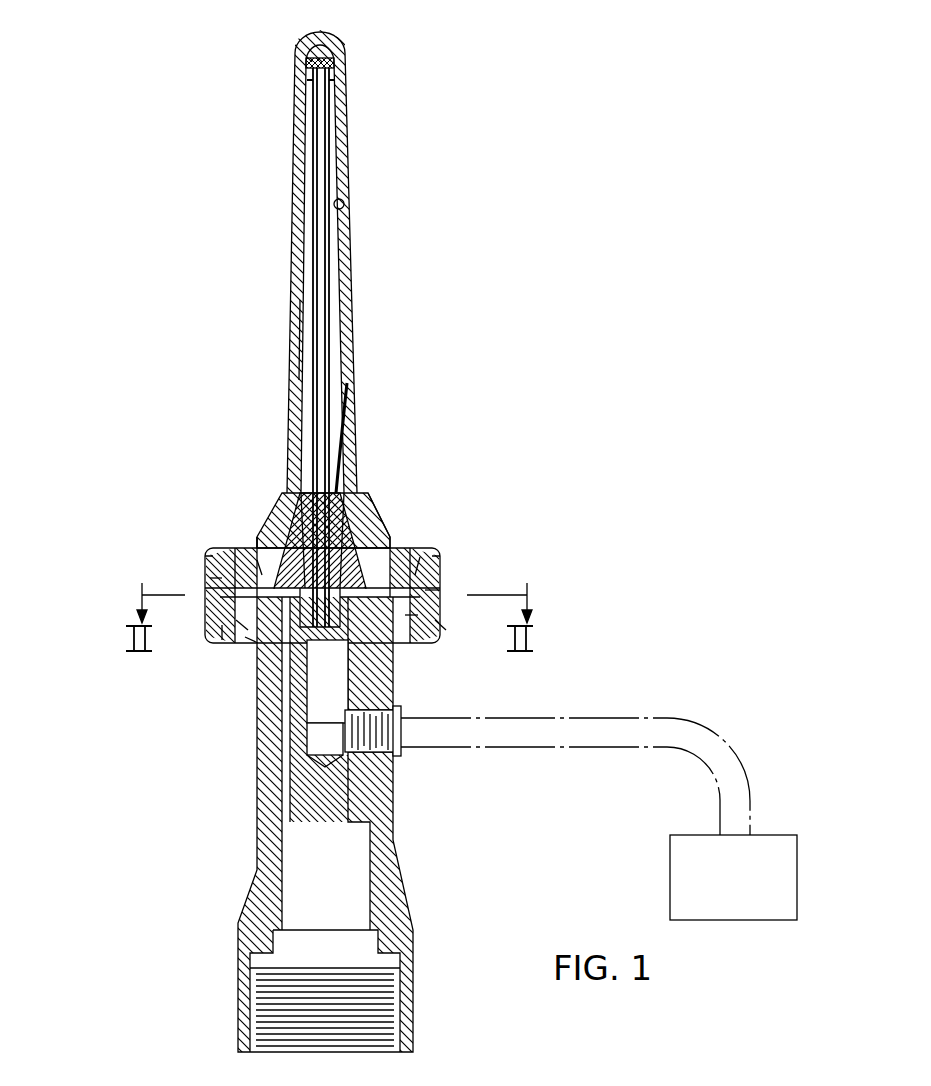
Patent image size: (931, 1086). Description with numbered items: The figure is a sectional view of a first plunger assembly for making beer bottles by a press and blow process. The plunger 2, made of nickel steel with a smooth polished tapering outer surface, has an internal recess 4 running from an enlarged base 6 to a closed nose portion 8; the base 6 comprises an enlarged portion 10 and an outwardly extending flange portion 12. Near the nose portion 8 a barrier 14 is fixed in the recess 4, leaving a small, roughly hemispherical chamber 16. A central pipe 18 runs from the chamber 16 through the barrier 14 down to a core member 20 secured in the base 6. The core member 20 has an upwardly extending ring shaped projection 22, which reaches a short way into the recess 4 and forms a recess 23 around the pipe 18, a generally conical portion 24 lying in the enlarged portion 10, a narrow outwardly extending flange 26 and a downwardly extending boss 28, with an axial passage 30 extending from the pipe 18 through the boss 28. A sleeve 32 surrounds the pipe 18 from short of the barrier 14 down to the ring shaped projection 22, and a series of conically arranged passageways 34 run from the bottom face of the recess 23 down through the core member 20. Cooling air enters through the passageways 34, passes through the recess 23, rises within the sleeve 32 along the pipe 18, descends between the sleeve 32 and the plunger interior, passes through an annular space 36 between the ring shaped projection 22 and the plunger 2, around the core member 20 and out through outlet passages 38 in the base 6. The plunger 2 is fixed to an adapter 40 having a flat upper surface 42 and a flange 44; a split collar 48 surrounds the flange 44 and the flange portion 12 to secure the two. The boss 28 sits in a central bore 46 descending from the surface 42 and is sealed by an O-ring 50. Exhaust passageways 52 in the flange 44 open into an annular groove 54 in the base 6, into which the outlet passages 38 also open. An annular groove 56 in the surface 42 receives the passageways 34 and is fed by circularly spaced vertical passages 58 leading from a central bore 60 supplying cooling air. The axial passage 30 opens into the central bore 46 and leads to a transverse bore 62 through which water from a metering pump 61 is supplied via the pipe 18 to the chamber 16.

The plunger 2 is at (350, 273).
The internal recess 4 is at (345, 206).
The enlarged base 6 is at (392, 542).
The nose portion 8 is at (340, 48).
The enlarged portion 10 is at (260, 486).
The flange portion 12 is at (225, 592).
The barrier 14 is at (338, 63).
The chamber 16 is at (313, 48).
The central pipe 18 is at (326, 128).
The core member 20 is at (368, 522).
The ring shaped projection 22 is at (357, 486).
The recess 23 is at (344, 420).
The conical portion 24 is at (248, 520).
The flange 26 is at (412, 615).
The boss 28 is at (331, 645).
The axial passage 30 is at (262, 640).
The sleeve 32 is at (300, 303).
The conically arranged passageways 34 is at (272, 530).
The annular space 36 is at (378, 492).
The outlet passages 38 is at (257, 560).
The adapter 40 is at (385, 848).
The flat upper surface 42 is at (210, 578).
The flange 44 is at (222, 640).
The central bore 46 is at (303, 722).
The split collar 48 is at (440, 590).
The O-ring 50 is at (242, 625).
The exhaust passageways 52 is at (252, 642).
The annular groove 54 is at (232, 555).
The annular groove 56 is at (386, 660).
The vertical passages 58 is at (284, 802).
The central bore 60 is at (285, 912).
The metering pump 61 is at (740, 899).
The transverse bore 62 is at (401, 750).